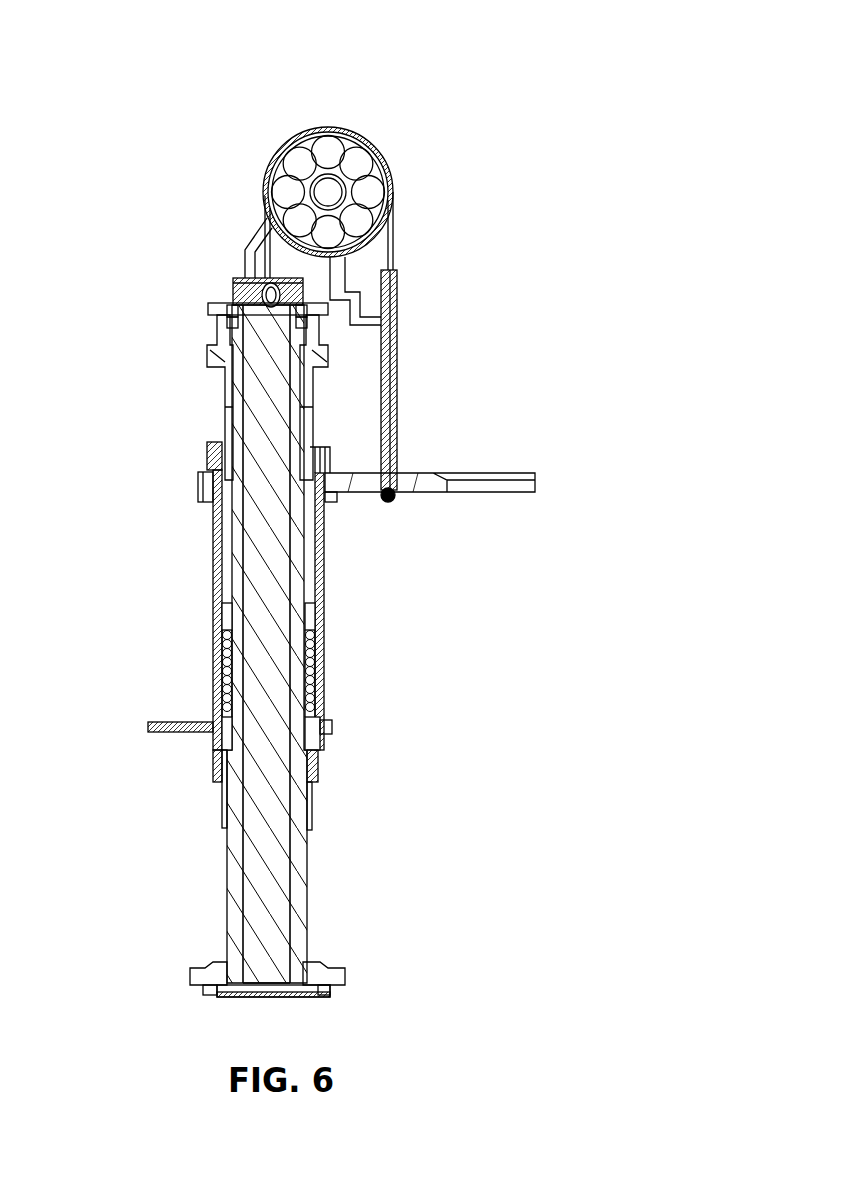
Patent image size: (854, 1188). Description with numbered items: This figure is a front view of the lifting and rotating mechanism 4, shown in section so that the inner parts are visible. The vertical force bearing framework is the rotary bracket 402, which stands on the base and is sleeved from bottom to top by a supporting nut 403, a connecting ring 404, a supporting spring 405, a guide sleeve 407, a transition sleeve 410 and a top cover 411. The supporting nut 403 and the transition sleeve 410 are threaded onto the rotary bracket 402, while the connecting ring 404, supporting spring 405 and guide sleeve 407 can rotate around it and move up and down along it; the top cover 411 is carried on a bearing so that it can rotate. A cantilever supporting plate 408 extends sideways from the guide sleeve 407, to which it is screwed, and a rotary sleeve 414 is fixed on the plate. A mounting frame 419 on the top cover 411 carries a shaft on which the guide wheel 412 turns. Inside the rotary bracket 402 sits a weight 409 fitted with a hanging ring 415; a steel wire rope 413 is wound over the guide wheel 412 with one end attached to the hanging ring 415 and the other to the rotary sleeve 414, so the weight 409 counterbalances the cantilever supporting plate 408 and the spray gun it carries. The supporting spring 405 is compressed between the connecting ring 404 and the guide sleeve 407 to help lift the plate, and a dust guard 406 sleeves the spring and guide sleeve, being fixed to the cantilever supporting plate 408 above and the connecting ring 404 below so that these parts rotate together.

The lifting and rotating mechanism 4 is at (197, 163).
The rotary bracket 402 is at (300, 930).
The supporting nut 403 is at (318, 808).
The connecting ring 404 is at (162, 730).
The supporting spring 405 is at (322, 678).
The dust guard 406 is at (212, 695).
The guide sleeve 407 is at (212, 584).
The cantilever supporting plate 408 is at (413, 490).
The weight 409 is at (255, 432).
The transition sleeve 410 is at (215, 378).
The top cover 411 is at (207, 312).
The guide wheel 412 is at (352, 178).
The steel wire rope 413 is at (457, 220).
The rotary sleeve 414 is at (397, 357).
The hanging ring 415 is at (228, 292).
The mounting frame 419 is at (240, 247).